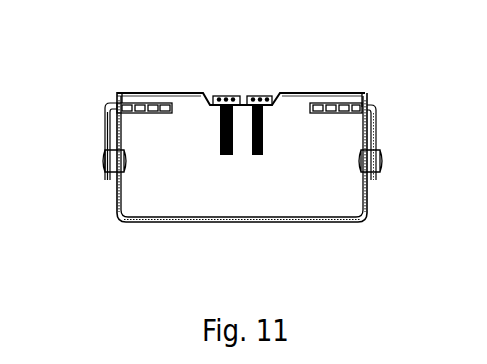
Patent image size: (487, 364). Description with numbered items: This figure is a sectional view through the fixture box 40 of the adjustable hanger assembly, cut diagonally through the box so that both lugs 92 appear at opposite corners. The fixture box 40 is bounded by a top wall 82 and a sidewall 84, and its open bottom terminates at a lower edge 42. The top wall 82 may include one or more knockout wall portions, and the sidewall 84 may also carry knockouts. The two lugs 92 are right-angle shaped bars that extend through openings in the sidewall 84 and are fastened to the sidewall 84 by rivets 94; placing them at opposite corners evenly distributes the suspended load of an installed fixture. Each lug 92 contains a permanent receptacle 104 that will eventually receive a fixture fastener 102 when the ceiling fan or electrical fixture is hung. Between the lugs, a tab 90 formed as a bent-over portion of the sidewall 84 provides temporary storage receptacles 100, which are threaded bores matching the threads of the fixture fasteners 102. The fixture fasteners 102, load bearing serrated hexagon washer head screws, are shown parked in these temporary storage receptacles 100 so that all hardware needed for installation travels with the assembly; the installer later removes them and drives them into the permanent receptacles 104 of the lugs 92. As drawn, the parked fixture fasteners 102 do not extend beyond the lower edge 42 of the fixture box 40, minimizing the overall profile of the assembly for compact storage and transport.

The fixture box 40 is at (110, 66).
The lower edge 42 is at (182, 93).
The top wall 82 is at (303, 218).
The sidewall 84 is at (162, 144).
The tab 90 is at (262, 107).
The lugs 92 is at (374, 117).
The rivets 94 is at (383, 152).
The temporary storage receptacles 100 is at (210, 107).
The fixture fasteners 102 is at (228, 95).
The permanent receptacles 104 is at (328, 108).